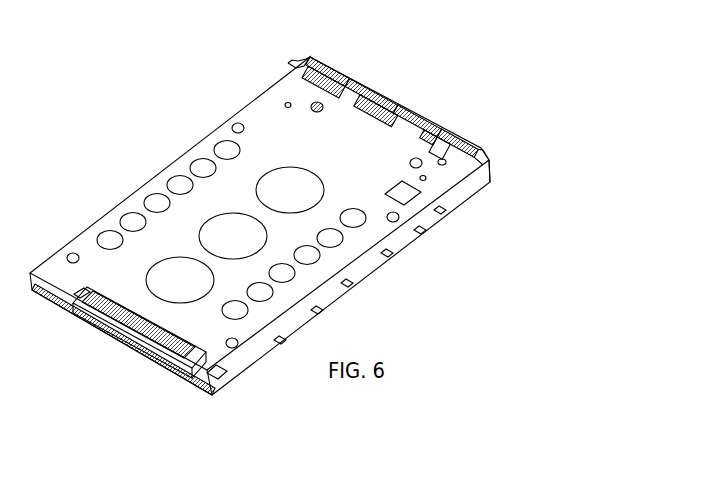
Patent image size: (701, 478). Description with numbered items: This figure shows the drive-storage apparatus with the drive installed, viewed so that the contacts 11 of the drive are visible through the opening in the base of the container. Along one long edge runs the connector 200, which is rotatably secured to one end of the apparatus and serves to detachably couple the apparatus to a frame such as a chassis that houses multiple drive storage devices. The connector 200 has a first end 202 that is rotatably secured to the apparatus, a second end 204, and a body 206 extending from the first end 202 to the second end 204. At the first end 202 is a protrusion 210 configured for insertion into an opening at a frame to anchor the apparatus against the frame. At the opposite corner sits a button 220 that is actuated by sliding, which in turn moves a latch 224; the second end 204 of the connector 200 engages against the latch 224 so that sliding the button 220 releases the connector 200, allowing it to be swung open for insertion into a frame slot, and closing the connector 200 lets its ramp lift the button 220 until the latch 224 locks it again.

The contacts 11 is at (145, 333).
The connector 200 is at (383, 93).
The first end 202 is at (320, 62).
The second end 204 is at (430, 127).
The body 206 is at (360, 80).
The protrusion 210 is at (312, 55).
The button 220 is at (475, 144).
The latch 224 is at (462, 142).